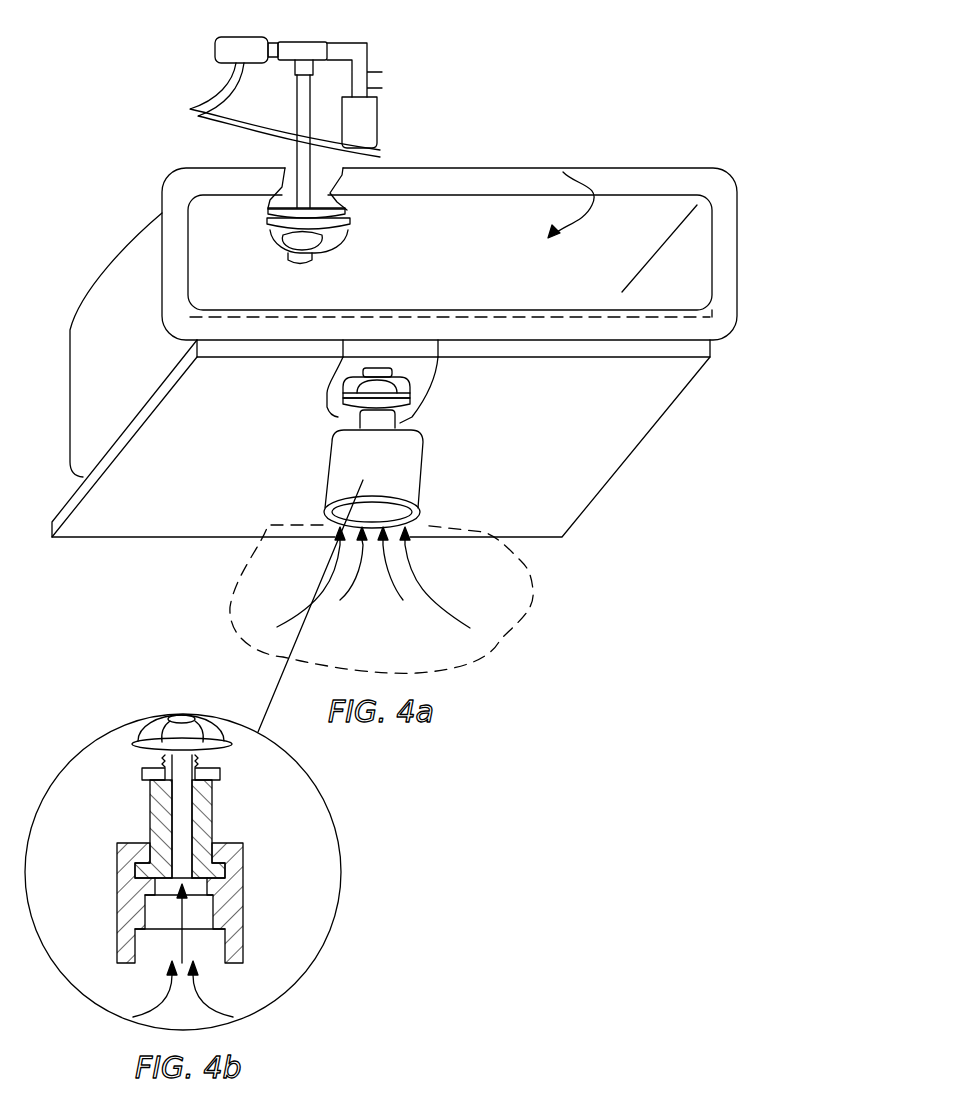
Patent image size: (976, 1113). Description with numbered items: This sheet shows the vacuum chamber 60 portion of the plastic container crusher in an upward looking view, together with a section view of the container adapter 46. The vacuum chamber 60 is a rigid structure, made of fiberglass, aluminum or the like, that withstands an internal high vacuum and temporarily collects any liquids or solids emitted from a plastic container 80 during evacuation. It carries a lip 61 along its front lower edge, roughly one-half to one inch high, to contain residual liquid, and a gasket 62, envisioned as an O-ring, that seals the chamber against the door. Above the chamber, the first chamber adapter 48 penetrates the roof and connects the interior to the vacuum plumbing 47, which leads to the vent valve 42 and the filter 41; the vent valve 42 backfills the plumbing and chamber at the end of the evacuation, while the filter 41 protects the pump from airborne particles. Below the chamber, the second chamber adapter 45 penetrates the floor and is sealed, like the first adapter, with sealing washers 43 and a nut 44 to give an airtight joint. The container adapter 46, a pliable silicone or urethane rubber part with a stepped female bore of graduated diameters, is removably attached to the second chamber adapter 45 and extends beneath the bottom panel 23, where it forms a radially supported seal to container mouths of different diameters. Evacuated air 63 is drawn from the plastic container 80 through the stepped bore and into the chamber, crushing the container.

In FIG. 4a, the bottom panel 23 is at (580, 450).
In FIG. 4a, the filter 41 is at (367, 113).
In FIG. 4a, the vent valve 42 is at (242, 50).
In FIG. 4a, the washer 43 is at (343, 220).
In FIG. 4b, the washer 43 is at (143, 773).
In FIG. 4a, the nut 44 is at (273, 240).
In FIG. 4b, the nut 44 is at (157, 735).
In FIG. 4a, the second chamber adapter 45 is at (352, 408).
In FIG. 4b, the second chamber adapter 45 is at (212, 810).
In FIG. 4a, the container adapter 46 is at (405, 470).
In FIG. 4b, the container adapter 46 is at (228, 888).
In FIG. 4a, the vacuum plumbing 47 is at (310, 48).
In FIG. 4a, the first chamber adapter 48 is at (293, 262).
In FIG. 4a, the vacuum chamber 60 is at (588, 143).
In FIG. 4a, the lip 61 is at (595, 314).
In FIG. 4a, the gasket 62 is at (724, 190).
In FIG. 4a, the evacuated air 63 is at (470, 628).
In FIG. 4b, the evacuated air 63 is at (233, 1017).
In FIG. 4a, the plastic container 80 is at (465, 642).